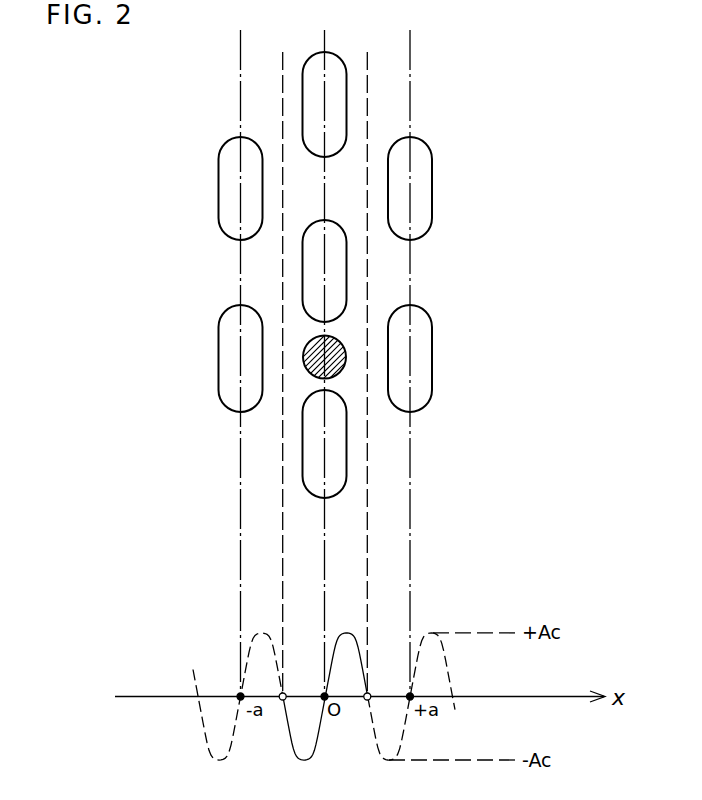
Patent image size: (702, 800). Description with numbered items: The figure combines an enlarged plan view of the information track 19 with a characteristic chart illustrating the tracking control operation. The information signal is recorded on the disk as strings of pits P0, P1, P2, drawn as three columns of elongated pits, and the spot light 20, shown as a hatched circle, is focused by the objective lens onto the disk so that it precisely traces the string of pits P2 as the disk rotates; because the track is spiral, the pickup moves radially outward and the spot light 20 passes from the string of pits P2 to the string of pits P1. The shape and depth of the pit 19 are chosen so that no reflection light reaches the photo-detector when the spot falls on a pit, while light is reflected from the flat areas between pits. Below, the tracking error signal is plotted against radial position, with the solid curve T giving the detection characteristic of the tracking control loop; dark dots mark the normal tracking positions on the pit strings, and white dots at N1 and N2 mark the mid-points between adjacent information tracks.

The information track 19 is at (347, 468).
The spot light 20 is at (338, 373).
The string of pits P0 is at (325, 350).
The string of pits P1 is at (410, 350).
The string of pits P2 is at (241, 350).
The intermediate track N1 is at (364, 363).
The intermediate track N2 is at (278, 363).
The detection characteristic curve T is at (292, 753).